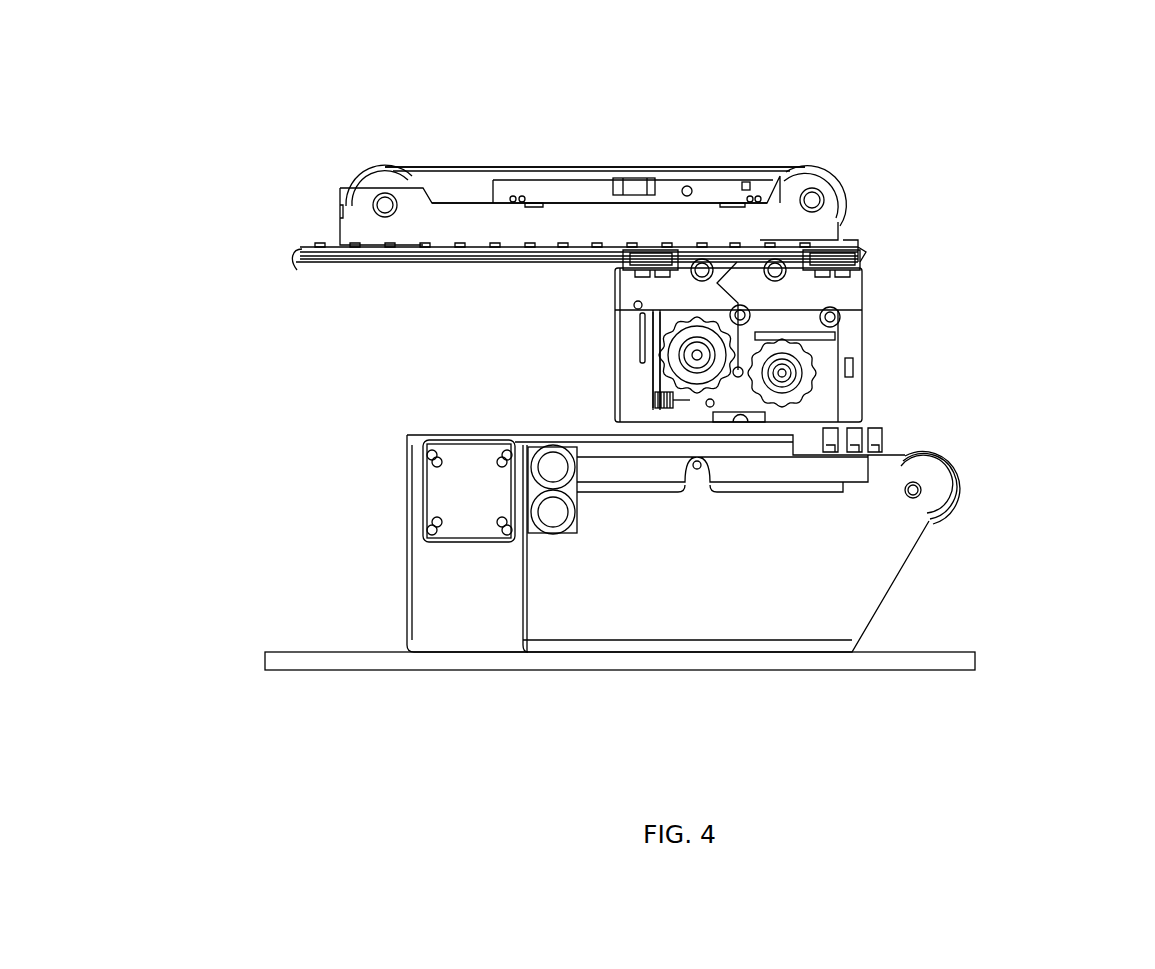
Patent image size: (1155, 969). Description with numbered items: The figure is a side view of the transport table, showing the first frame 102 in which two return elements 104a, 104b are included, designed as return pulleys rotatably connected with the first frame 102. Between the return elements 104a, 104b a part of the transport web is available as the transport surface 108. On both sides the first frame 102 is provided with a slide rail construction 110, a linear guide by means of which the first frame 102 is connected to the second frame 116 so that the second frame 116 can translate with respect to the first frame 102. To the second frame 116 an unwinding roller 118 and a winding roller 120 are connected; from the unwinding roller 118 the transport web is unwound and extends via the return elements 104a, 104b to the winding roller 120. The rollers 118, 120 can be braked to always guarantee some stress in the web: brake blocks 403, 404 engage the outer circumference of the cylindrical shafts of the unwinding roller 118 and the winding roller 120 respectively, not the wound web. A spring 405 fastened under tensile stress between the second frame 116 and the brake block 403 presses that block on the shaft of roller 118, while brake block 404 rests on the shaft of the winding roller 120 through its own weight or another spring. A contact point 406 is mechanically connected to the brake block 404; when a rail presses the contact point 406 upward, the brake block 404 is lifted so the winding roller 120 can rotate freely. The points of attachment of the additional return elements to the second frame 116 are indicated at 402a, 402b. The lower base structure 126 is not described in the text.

The first frame 102 is at (348, 215).
The first return element 104a is at (371, 176).
The second return element 104b is at (823, 182).
The transport surface 108 is at (690, 165).
The slide rail construction 110 is at (292, 258).
The second frame 116 is at (857, 378).
The unwinding roller 118 is at (678, 363).
The winding roller 120 is at (808, 378).
The base body 126 is at (840, 557).
The point of attachment of additional return element 402a is at (697, 274).
The point of attachment of additional return element 402b is at (780, 274).
The brake block 403 is at (655, 330).
The brake block 404 is at (765, 305).
The spring 405 is at (678, 385).
The contact point 406 is at (733, 416).